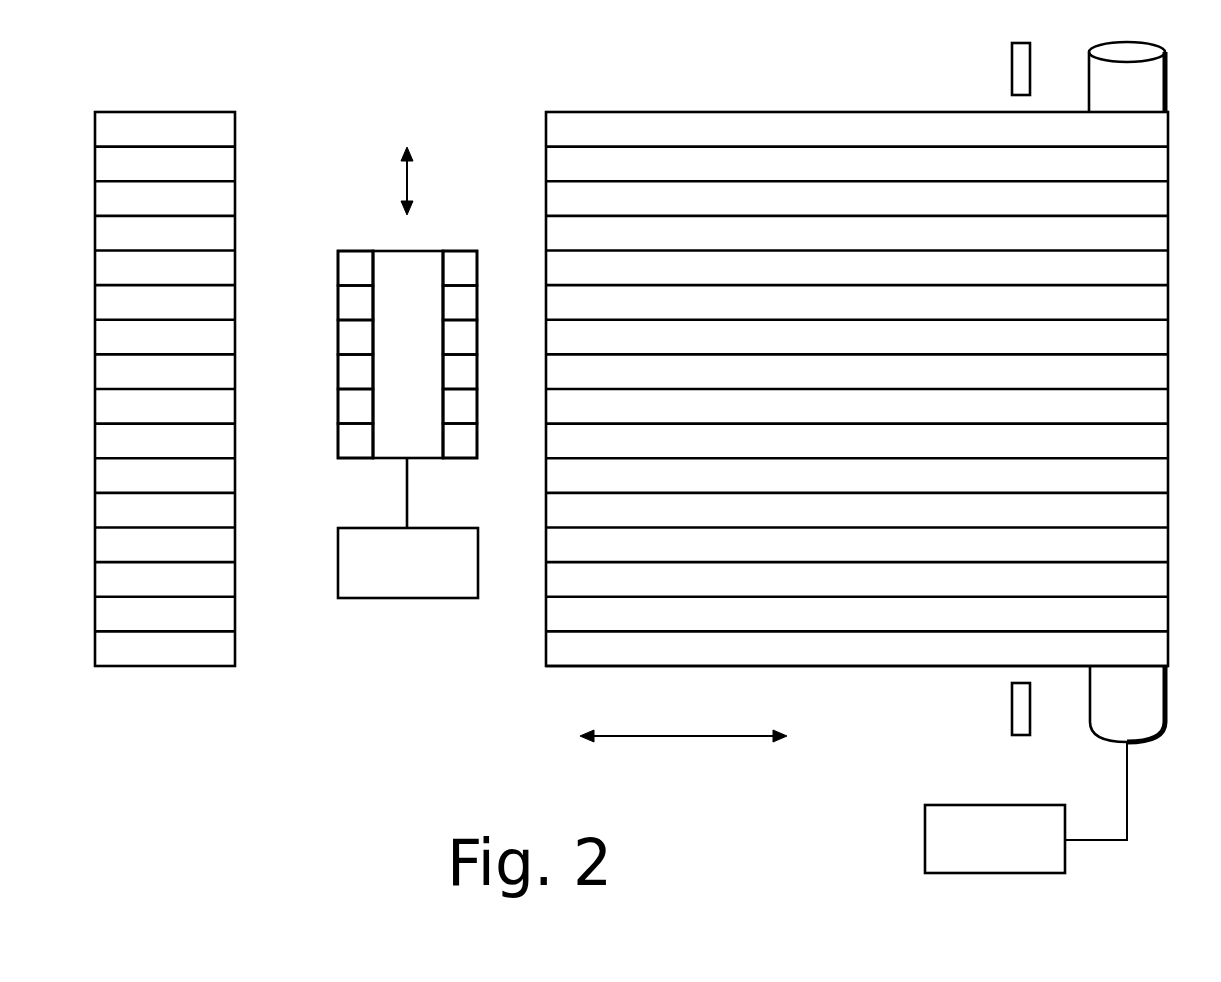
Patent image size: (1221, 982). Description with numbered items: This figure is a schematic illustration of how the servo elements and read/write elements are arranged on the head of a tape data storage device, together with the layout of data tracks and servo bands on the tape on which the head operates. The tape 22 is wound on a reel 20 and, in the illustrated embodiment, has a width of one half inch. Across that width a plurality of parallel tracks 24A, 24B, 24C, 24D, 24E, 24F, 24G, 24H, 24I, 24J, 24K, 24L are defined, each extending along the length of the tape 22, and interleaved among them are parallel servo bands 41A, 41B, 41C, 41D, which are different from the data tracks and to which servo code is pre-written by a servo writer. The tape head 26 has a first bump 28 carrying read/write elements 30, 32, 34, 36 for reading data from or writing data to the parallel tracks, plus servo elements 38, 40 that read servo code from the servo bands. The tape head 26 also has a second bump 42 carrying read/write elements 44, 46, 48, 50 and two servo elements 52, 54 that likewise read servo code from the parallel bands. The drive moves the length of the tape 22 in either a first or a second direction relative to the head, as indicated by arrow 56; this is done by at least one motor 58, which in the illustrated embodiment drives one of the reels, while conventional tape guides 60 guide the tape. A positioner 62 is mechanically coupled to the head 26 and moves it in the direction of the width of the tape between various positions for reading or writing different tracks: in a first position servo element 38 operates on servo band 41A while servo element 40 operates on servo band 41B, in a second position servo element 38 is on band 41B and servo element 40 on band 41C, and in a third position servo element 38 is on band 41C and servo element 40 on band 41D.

The reel 20 is at (1168, 693).
The tape 22 is at (165, 666).
The parallel track 24A is at (857, 169).
The parallel track 24B is at (857, 204).
The parallel track 24C is at (857, 239).
The parallel track 24D is at (857, 273).
The parallel track 24E is at (857, 342).
The parallel track 24F is at (857, 377).
The parallel track 24G is at (857, 412).
The parallel track 24H is at (857, 446).
The parallel track 24I is at (857, 516).
The parallel track 24J is at (857, 550).
The parallel track 24K is at (857, 585).
The parallel track 24L is at (857, 619).
The servo band 41A is at (857, 135).
The servo band 41B is at (857, 308).
The servo band 41C is at (857, 481).
The servo band 41D is at (857, 654).
The tape head 26 is at (390, 251).
The first bump 28 is at (356, 245).
The second bump 42 is at (458, 245).
The servo element 38 is at (338, 271).
The read/write element 30 is at (338, 305).
The read/write element 32 is at (338, 339).
The read/write element 34 is at (338, 373).
The read/write element 36 is at (338, 408).
The servo element 40 is at (338, 442).
The servo element 52 is at (476, 271).
The read/write element 44 is at (476, 305).
The read/write element 46 is at (476, 339).
The read/write element 48 is at (476, 373).
The read/write element 50 is at (476, 408).
The servo element 54 is at (476, 442).
The positioner 62 is at (452, 528).
The arrow 56 is at (684, 736).
The tape guide 60 is at (1012, 70).
The motor 58 is at (1026, 807).